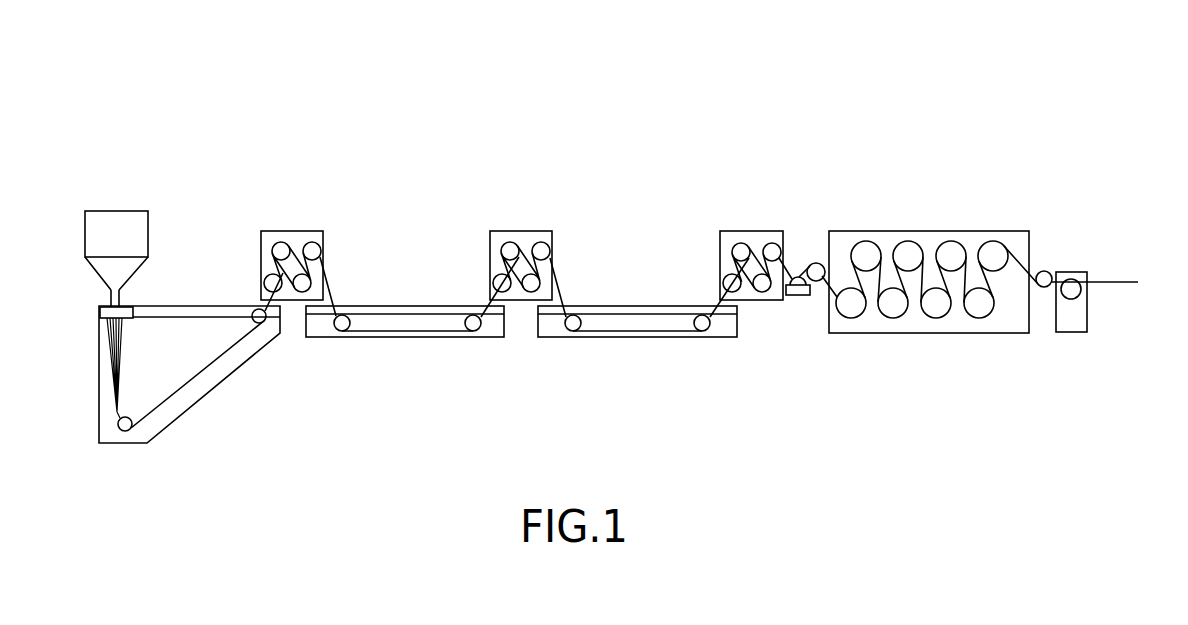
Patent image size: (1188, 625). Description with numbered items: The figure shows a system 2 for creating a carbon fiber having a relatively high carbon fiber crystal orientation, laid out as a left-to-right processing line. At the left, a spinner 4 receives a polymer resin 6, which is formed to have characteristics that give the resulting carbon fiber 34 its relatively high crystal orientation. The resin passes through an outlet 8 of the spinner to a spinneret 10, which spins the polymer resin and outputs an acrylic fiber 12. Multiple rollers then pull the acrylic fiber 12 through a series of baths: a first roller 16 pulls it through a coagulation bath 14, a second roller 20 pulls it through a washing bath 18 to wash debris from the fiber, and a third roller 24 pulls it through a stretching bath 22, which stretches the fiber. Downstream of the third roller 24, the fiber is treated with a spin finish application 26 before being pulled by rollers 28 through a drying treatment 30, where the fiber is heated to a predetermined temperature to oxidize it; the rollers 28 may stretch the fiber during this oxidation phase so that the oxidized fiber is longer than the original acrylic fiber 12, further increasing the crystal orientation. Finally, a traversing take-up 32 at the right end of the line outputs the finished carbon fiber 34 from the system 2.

The system 2 is at (769, 98).
The spinner 4 is at (149, 218).
The polymer resin 6 is at (130, 257).
The spinneret nozzle 8 is at (124, 291).
The spinneret 10 is at (99, 317).
The acrylic fiber 12 is at (108, 357).
The coagulation bath 14 is at (140, 392).
The first roller 16 is at (324, 238).
The washing bath 18 is at (425, 310).
The second roller 20 is at (552, 247).
The stretching bath 22 is at (655, 318).
The third roller 24 is at (748, 230).
The spin finish application 26 is at (792, 281).
The rollers 28 is at (937, 230).
The drying treatment 30 is at (995, 230).
The traversing take-up 32 is at (1068, 272).
The carbon fiber 34 is at (1120, 282).